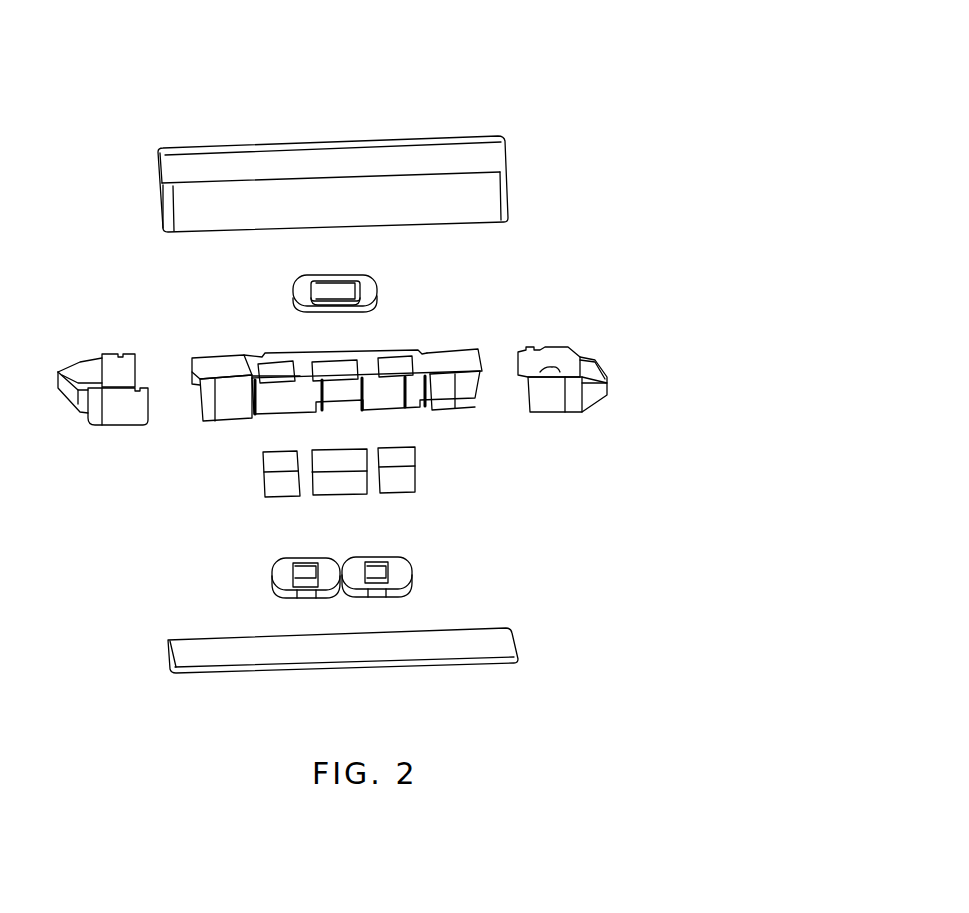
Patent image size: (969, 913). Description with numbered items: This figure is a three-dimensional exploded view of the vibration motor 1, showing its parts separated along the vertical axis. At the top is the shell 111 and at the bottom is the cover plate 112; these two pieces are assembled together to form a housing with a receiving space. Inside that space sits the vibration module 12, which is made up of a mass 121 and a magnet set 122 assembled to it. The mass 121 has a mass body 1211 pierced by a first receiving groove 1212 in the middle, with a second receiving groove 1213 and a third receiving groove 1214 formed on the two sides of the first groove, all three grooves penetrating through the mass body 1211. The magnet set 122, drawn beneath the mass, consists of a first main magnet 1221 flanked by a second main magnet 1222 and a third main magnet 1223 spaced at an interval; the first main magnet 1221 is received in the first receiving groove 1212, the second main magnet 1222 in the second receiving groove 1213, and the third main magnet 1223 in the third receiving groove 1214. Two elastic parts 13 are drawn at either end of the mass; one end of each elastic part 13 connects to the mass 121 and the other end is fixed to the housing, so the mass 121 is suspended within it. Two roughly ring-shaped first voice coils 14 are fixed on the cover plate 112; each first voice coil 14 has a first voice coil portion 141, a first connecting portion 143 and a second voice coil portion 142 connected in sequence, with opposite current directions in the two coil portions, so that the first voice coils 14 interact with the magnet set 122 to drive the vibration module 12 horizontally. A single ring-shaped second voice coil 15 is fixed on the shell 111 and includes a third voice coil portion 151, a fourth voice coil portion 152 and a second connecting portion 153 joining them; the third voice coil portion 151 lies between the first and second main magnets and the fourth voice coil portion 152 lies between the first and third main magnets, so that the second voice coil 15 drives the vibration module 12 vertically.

The vibration motor 1 is at (370, 45).
The shell 111 is at (505, 172).
The cover plate 112 is at (513, 658).
The vibration module 12 is at (722, 380).
The mass 121 is at (655, 293).
The mass body 1211 is at (465, 392).
The first receiving groove 1212 is at (350, 370).
The second receiving groove 1213 is at (400, 366).
The third receiving groove 1214 is at (283, 375).
The magnet set 122 is at (657, 505).
The first main magnet 1221 is at (345, 493).
The second main magnet 1222 is at (402, 492).
The third main magnet 1223 is at (287, 497).
The elastic part 13 is at (67, 393).
The first voice coil 14 is at (73, 587).
The first voice coil portion 141 is at (327, 565).
The second voice coil portion 142 is at (283, 575).
The first connecting portion 143 is at (283, 590).
The second voice coil 15 is at (136, 250).
The third voice coil portion 151 is at (362, 283).
The fourth voice coil portion 152 is at (300, 293).
The second connecting portion 153 is at (323, 307).